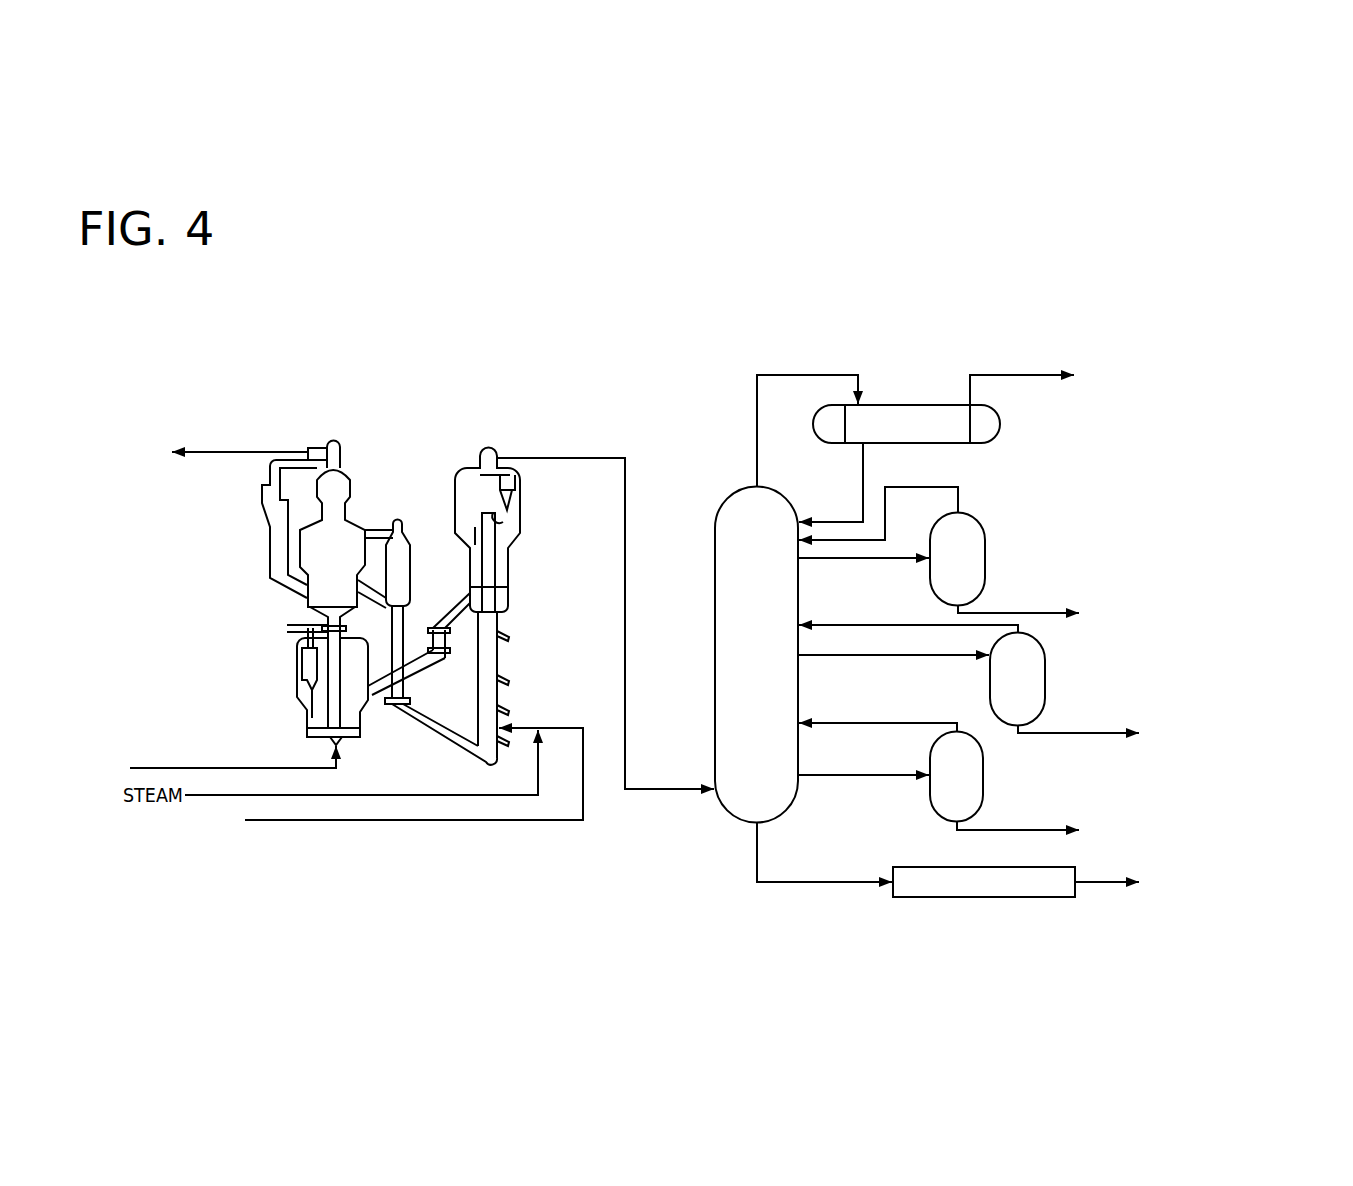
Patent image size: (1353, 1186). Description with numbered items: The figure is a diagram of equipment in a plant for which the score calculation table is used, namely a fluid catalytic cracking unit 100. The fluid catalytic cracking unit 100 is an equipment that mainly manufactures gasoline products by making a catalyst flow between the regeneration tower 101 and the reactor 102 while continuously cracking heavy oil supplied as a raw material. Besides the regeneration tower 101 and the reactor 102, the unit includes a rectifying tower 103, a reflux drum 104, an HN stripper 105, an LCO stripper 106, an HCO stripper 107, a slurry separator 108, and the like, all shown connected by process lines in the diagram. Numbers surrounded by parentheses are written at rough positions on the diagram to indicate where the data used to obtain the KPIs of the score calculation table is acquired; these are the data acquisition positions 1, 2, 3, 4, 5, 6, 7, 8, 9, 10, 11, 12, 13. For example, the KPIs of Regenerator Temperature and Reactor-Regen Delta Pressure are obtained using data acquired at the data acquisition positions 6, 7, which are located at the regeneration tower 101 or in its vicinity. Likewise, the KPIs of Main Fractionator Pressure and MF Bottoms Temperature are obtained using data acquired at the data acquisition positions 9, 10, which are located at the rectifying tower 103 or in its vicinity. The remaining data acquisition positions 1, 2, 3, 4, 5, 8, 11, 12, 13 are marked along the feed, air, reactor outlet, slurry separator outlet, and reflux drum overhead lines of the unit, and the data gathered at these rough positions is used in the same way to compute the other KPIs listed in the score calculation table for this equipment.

The fluid catalytic cracking unit 100 is at (946, 268).
The regeneration tower 101 is at (355, 520).
The reactor 102 is at (463, 468).
The rectifying tower 103 is at (737, 490).
The reflux drum 104 is at (905, 403).
The HN stripper 105 is at (985, 558).
The LCO stripper 106 is at (1045, 678).
The HCO stripper 107 is at (983, 775).
The slurry separator 108 is at (1040, 897).
The data acquisition position 1 is at (414, 790).
The data acquisition position 2 is at (188, 835).
The data acquisition position 3 is at (1127, 899).
The data acquisition position 4 is at (605, 603).
The data acquisition position 5 is at (414, 790).
The data acquisition position 6 is at (275, 529).
The data acquisition position 7 is at (250, 431).
The data acquisition position 8 is at (214, 760).
The data acquisition position 9 is at (801, 416).
The data acquisition position 10 is at (824, 852).
The data acquisition position 11 is at (1060, 378).
The data acquisition position 12 is at (1060, 378).
The data acquisition position 13 is at (1060, 378).